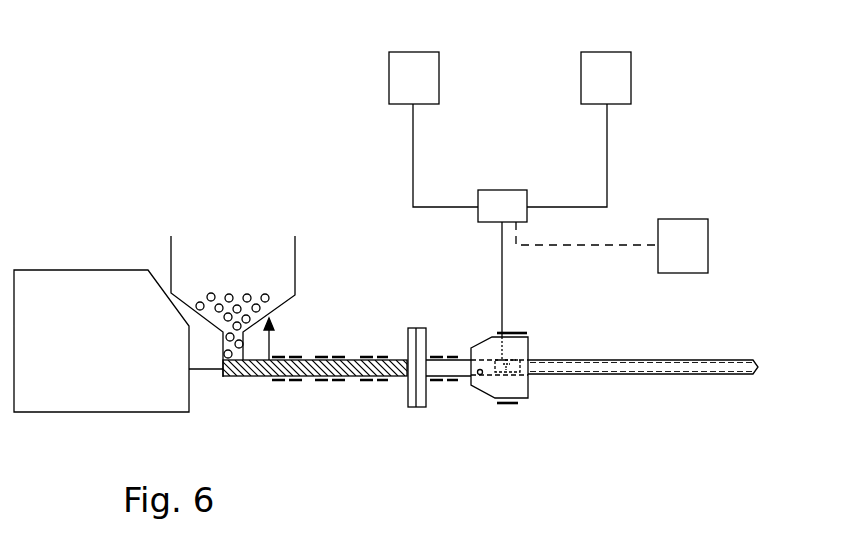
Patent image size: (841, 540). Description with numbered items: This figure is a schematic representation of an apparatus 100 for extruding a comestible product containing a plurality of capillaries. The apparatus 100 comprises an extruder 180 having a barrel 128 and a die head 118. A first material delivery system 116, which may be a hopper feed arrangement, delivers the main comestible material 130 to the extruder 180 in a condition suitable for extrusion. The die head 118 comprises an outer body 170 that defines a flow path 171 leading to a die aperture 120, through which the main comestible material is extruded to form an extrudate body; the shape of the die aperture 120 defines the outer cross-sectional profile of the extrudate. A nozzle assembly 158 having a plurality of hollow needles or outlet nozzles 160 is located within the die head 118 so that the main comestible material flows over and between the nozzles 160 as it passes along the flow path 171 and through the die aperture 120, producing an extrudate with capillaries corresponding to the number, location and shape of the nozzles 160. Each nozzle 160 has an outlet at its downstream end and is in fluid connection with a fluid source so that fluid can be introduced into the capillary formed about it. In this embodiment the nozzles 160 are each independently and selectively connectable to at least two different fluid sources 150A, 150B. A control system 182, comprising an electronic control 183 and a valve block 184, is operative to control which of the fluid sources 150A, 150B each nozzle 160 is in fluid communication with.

The apparatus 100 is at (158, 131).
The first material delivery system 116 is at (295, 258).
The main comestible material 130 is at (210, 293).
The barrel 128 is at (353, 378).
The extruder 180 is at (312, 358).
The die head 118 is at (485, 392).
The nozzle assembly 158 is at (500, 360).
The nozzles 160 is at (515, 362).
The flow path 171 is at (482, 374).
The outer body 170 is at (520, 403).
The die aperture 120 is at (530, 360).
The valve block 184 is at (505, 197).
The first fluid source 150A is at (439, 65).
The second fluid source 150B is at (631, 58).
The electronic control 183 is at (708, 252).
The control system 182 is at (680, 183).